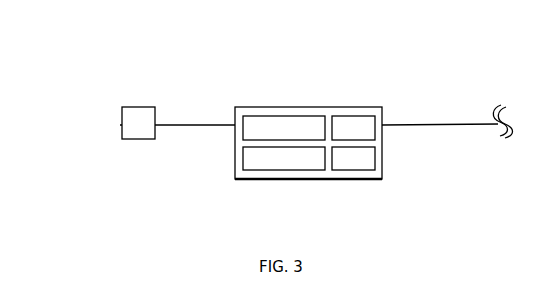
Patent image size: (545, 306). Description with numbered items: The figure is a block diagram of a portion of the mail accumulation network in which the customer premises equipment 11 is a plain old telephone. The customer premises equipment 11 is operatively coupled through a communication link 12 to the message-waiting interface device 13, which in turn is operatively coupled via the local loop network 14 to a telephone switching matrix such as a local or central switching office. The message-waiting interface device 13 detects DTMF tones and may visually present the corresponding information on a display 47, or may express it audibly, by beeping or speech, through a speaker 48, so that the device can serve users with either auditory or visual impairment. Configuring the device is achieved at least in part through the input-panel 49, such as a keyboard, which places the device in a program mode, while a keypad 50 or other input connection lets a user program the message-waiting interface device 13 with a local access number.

The customer premises equipment 11 is at (120, 125).
The communication link 12 is at (220, 125).
The message-waiting interface device 13 is at (300, 107).
The local loop network 14 is at (397, 125).
The display 47 is at (284, 128).
The speaker 48 is at (353, 128).
The input-panel 49 is at (284, 158).
The keypad 50 is at (353, 158).